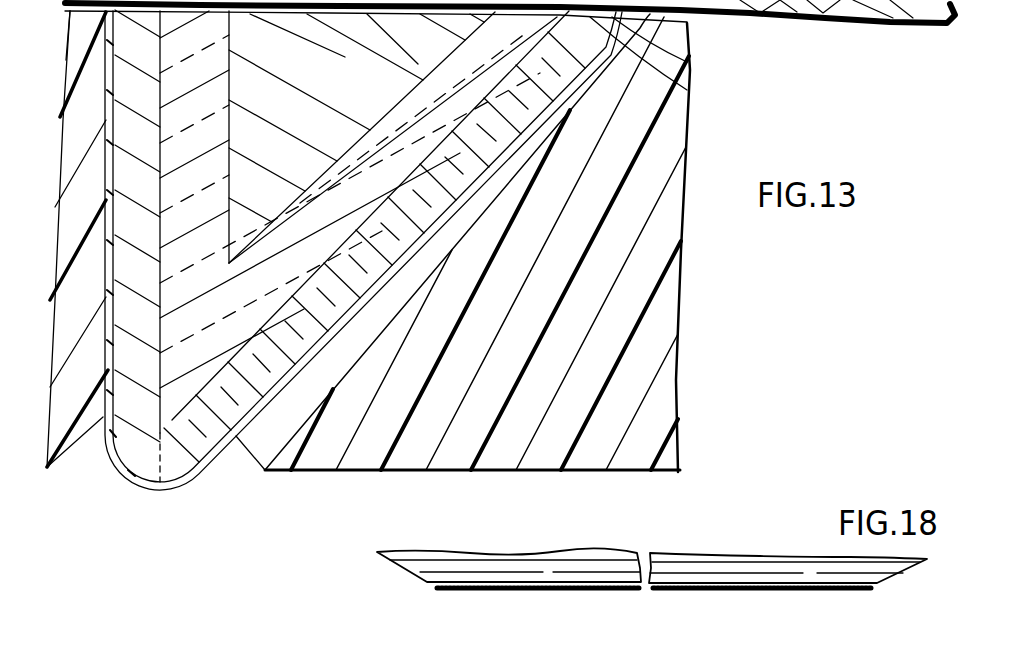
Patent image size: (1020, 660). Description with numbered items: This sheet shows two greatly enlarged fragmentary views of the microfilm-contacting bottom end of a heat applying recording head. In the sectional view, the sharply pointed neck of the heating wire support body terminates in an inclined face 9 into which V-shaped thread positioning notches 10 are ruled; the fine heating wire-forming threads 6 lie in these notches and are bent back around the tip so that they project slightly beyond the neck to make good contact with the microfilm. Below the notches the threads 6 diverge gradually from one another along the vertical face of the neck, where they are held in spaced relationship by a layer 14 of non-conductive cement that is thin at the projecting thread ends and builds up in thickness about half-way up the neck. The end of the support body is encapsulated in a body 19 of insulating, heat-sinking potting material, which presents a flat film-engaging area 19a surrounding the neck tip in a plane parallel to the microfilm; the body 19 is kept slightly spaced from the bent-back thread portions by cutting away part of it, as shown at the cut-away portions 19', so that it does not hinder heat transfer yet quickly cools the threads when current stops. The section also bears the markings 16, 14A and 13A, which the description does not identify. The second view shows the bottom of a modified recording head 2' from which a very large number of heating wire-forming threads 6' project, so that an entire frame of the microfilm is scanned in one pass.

In FIG. 13, the outer skin layer 16 is at (660, 63).
In FIG. 13, the thread positioning notches 10 is at (640, 80).
In FIG. 13, the inclined face 9 is at (640, 97).
In FIG. 13, the encapsulating body of insulating potting material 19 is at (522, 287).
In FIG. 13, the cut-away portion of the encapsulating body 19' is at (163, 275).
In FIG. 13, the flat film-engaging area 19a is at (50, 470).
In FIG. 13, the layer of non-conductive cement 14 is at (193, 480).
In FIG. 13, the liner strip gap 14A is at (382, 36).
In FIG. 13, the fold dimension 13A is at (259, 303).
In FIG. 13, the heating wire-forming threads 6 is at (327, 290).
In FIG. 18, the panel section 2' is at (627, 580).
In FIG. 18, the core layer strip 6' is at (655, 608).